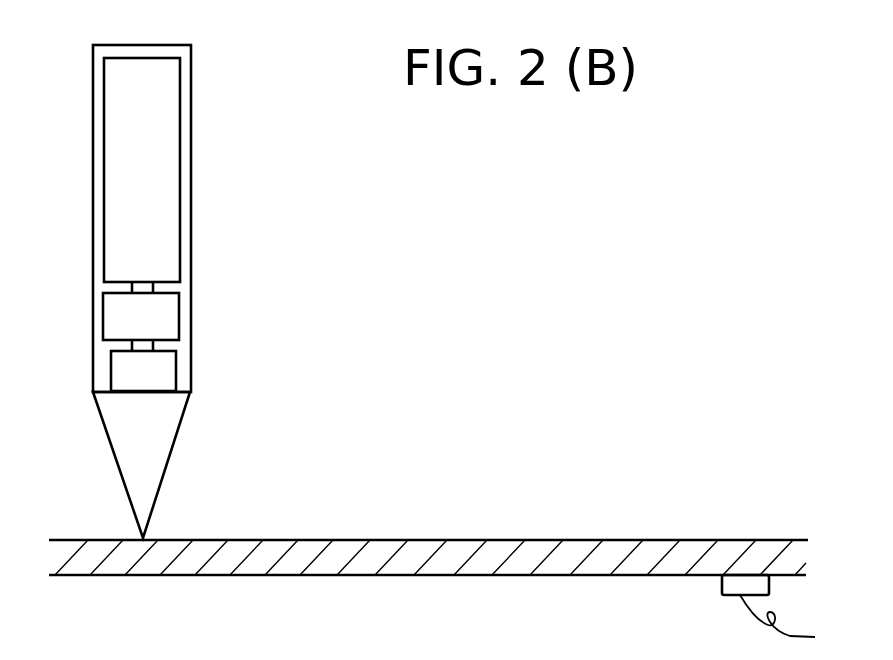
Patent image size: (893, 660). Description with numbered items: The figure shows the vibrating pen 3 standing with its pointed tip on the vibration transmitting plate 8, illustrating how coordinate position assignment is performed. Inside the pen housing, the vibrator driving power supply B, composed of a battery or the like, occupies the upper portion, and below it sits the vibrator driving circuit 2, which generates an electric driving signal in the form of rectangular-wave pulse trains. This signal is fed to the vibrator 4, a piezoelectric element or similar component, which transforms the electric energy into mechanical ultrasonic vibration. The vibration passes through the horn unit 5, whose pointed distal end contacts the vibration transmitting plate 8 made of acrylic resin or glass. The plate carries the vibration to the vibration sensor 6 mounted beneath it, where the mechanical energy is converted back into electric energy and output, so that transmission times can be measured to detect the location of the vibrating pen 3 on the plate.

The vibrating pen 3 is at (191, 83).
The vibrator driving power supply B is at (181, 165).
The vibrator driving circuit 2 is at (179, 322).
The vibrator 4 is at (111, 375).
The horn unit 5 is at (113, 457).
The vibration transmitting plate 8 is at (673, 540).
The vibration sensor 6 is at (731, 587).